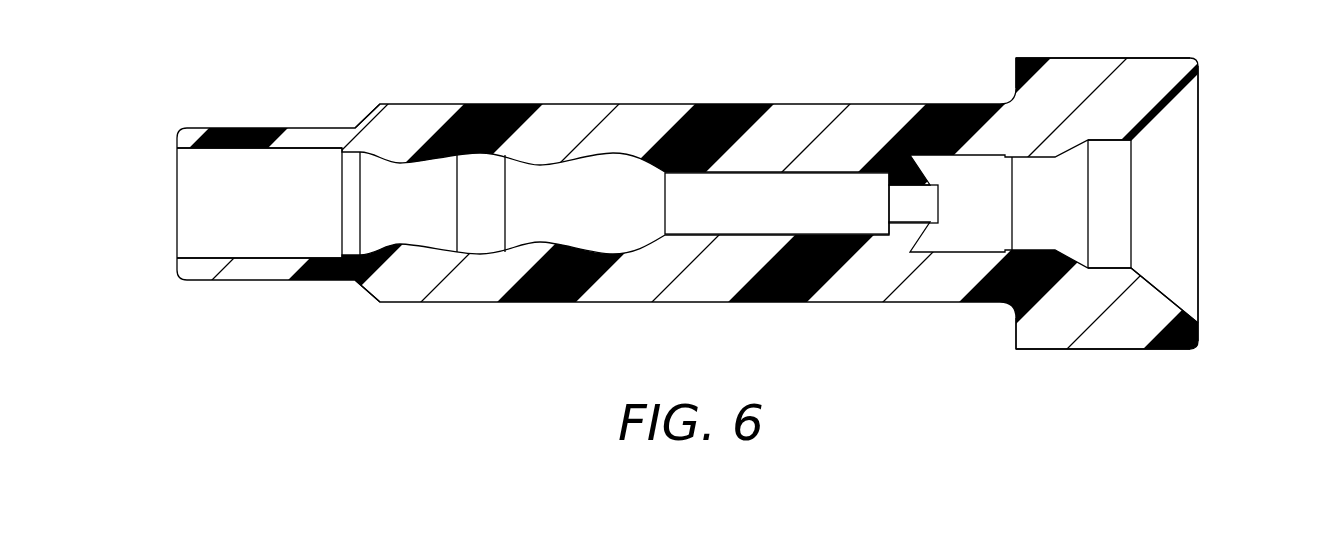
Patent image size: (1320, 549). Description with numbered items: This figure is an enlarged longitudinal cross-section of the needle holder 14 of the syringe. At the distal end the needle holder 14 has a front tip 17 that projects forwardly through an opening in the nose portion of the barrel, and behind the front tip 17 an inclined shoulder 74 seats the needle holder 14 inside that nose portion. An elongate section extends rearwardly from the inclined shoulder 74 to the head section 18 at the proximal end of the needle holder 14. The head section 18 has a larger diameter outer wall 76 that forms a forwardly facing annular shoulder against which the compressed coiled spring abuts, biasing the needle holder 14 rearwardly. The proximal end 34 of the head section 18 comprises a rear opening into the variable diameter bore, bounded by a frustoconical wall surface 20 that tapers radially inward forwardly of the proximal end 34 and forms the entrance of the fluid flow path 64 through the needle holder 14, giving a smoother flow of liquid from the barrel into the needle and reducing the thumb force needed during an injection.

The needle holder 14 is at (776, 58).
The front tip 17 is at (254, 128).
The head section 18 is at (1070, 70).
The frustoconical wall surface 20 is at (1163, 300).
The proximal end 34 is at (1199, 65).
The fluid flow path 64 is at (1120, 206).
The inclined shoulder 74 is at (363, 120).
The outer wall 76 is at (1053, 348).